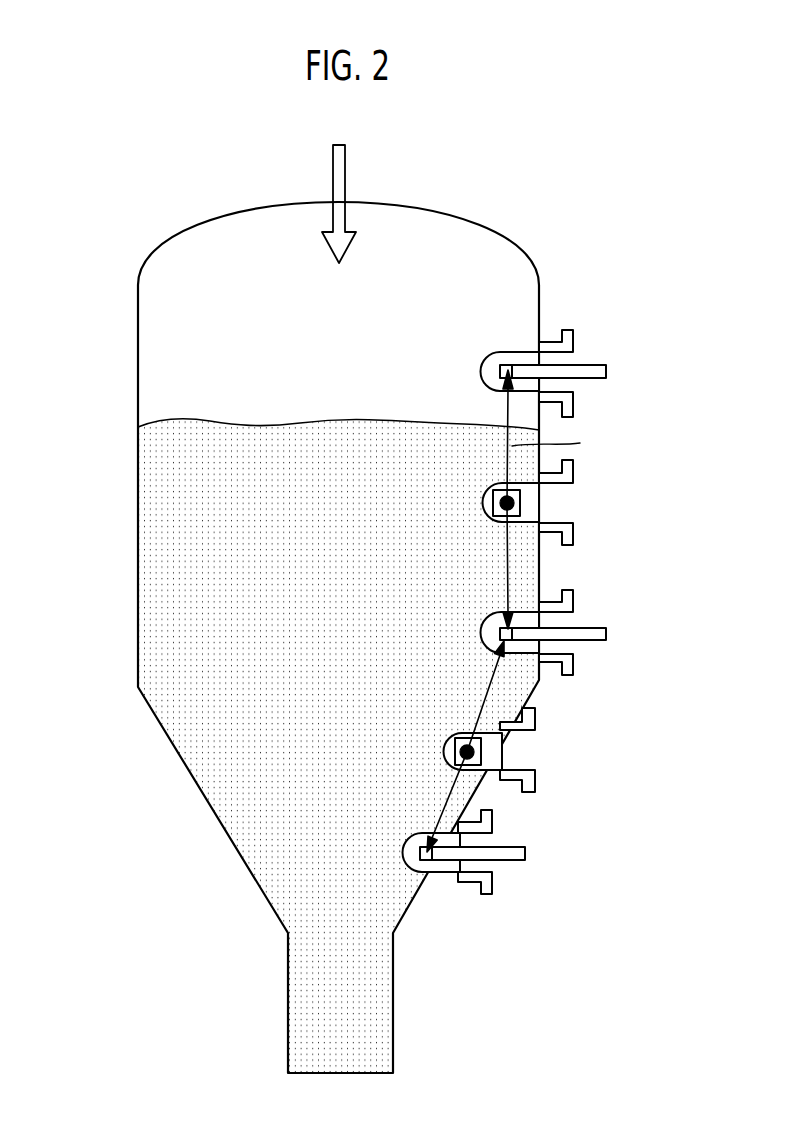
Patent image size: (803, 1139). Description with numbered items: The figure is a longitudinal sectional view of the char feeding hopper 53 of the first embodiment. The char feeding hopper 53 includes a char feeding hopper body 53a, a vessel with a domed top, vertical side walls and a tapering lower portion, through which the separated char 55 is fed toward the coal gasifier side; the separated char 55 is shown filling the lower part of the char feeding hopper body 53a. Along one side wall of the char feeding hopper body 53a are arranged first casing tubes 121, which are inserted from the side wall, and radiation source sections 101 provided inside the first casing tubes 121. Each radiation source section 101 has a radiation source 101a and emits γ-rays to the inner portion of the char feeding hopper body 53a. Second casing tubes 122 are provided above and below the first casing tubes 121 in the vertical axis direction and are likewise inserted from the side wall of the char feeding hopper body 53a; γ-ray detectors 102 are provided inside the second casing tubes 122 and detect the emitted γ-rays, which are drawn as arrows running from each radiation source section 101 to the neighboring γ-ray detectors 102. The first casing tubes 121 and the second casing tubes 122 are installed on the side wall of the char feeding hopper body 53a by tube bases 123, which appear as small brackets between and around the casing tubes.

The char feeding hopper 53 is at (532, 184).
The char feeding hopper body 53a is at (137, 328).
The separated char 55 is at (346, 160).
The radiation source section 101 is at (521, 500).
The radiation source 101a is at (507, 503).
The γ-ray detector 102 is at (607, 372).
The first casing tube 121 is at (483, 517).
The second casing tube 122 is at (500, 353).
The tube base 123 is at (574, 336).